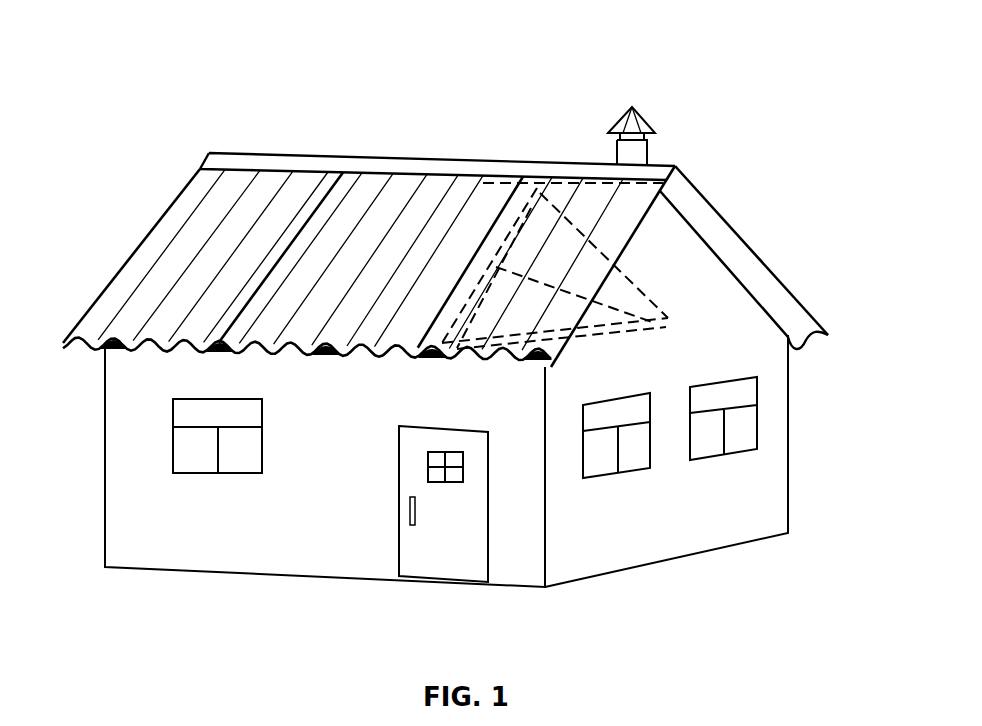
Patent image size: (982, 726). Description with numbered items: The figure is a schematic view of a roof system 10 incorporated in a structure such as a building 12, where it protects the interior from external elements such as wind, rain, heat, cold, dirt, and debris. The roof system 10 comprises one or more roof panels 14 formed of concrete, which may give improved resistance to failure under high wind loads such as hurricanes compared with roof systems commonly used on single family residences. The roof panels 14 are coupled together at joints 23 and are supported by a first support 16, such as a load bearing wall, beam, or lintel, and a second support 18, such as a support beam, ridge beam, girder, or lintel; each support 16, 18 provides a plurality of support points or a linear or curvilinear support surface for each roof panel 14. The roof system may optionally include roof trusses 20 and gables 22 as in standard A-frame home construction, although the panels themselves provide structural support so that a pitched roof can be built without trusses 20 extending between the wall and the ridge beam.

The roof system 10 is at (229, 152).
The building 12 is at (623, 62).
The roof panels 14 is at (181, 215).
The first support 16 is at (553, 357).
The second support 18 is at (659, 182).
The roof trusses 20 is at (637, 283).
The gables 22 is at (725, 287).
The joints 23 is at (324, 196).